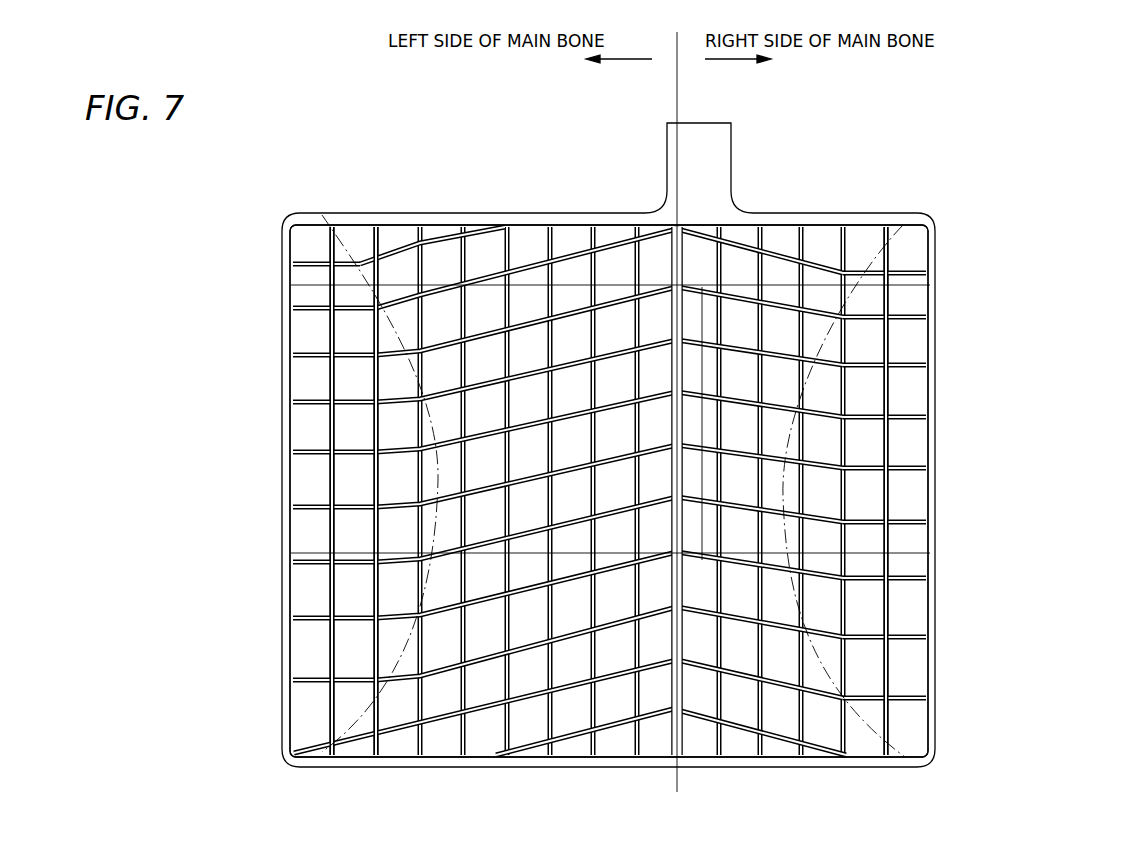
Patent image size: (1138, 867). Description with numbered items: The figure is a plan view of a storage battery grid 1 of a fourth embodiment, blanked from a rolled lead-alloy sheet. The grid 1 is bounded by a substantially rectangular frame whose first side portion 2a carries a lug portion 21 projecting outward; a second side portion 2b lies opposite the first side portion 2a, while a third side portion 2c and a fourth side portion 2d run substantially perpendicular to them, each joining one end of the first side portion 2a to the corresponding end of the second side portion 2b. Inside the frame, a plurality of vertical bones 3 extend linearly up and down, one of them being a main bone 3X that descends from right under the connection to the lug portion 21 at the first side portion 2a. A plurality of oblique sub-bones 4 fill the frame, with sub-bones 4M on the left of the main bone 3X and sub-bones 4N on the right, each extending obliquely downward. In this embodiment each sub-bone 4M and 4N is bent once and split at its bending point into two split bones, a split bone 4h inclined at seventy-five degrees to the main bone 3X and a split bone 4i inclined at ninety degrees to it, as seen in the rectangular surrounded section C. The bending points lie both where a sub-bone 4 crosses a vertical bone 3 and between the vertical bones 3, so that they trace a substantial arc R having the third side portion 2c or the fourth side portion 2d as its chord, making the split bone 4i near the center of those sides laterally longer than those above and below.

The grid 1 is at (1088, 174).
The first side portion 2a is at (488, 213).
The second side portion 2b is at (626, 768).
The third side portion 2c is at (283, 488).
The fourth side portion 2d is at (936, 392).
The lug portion 21 is at (700, 120).
The vertical bone 3 is at (600, 278).
The main bone 3X is at (680, 625).
The sub-bone 4 is at (609, 491).
The sub-bone 4M is at (311, 354).
The sub-bone 4N is at (910, 318).
The split bone 4h is at (521, 267).
The split bone 4i is at (323, 305).
The surrounded section C is at (300, 280).
The arc R is at (412, 385).